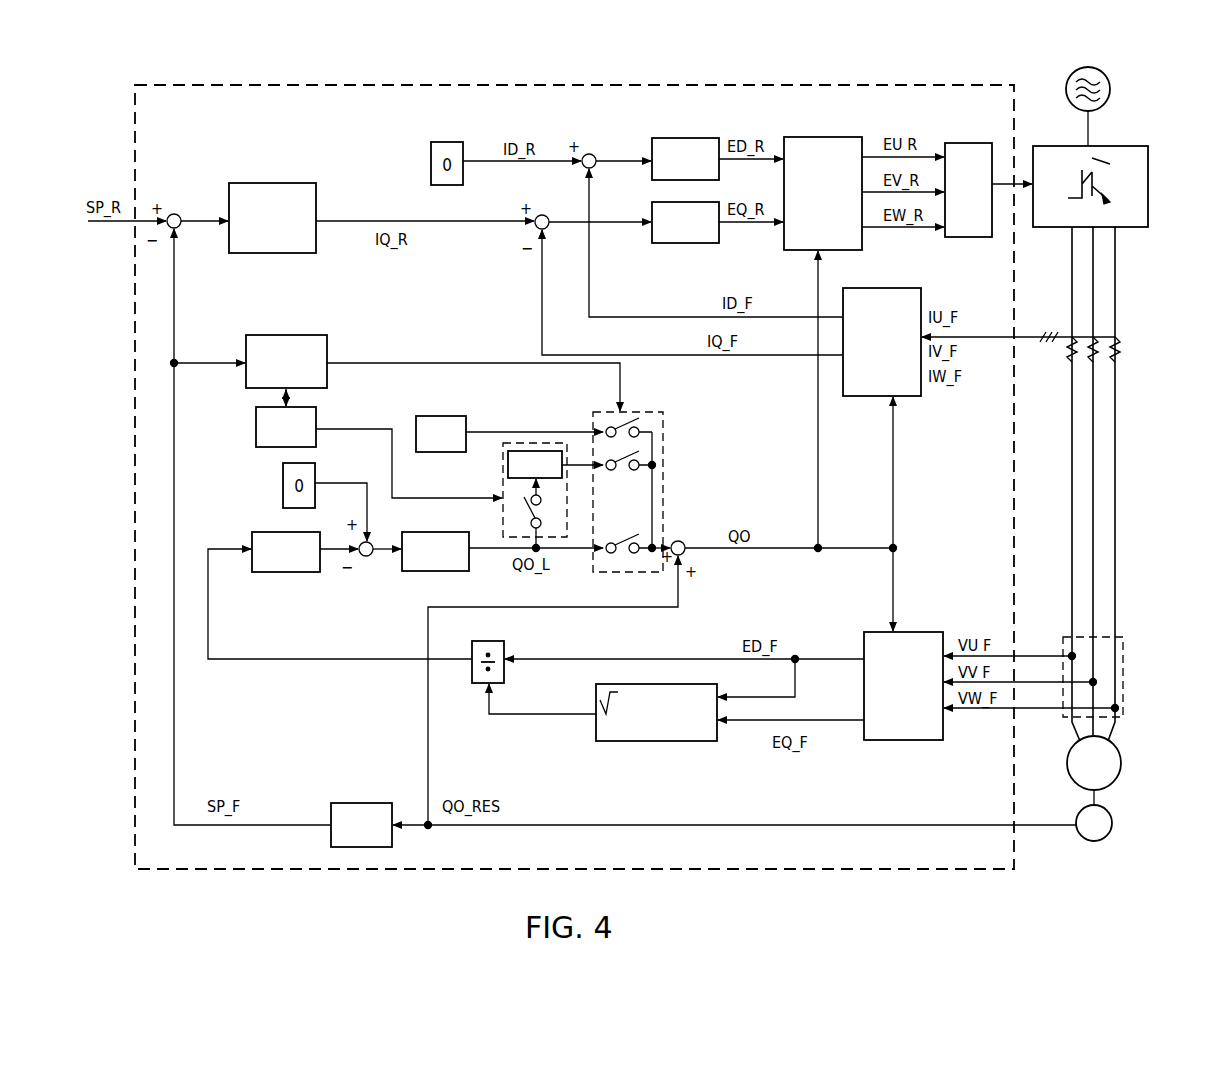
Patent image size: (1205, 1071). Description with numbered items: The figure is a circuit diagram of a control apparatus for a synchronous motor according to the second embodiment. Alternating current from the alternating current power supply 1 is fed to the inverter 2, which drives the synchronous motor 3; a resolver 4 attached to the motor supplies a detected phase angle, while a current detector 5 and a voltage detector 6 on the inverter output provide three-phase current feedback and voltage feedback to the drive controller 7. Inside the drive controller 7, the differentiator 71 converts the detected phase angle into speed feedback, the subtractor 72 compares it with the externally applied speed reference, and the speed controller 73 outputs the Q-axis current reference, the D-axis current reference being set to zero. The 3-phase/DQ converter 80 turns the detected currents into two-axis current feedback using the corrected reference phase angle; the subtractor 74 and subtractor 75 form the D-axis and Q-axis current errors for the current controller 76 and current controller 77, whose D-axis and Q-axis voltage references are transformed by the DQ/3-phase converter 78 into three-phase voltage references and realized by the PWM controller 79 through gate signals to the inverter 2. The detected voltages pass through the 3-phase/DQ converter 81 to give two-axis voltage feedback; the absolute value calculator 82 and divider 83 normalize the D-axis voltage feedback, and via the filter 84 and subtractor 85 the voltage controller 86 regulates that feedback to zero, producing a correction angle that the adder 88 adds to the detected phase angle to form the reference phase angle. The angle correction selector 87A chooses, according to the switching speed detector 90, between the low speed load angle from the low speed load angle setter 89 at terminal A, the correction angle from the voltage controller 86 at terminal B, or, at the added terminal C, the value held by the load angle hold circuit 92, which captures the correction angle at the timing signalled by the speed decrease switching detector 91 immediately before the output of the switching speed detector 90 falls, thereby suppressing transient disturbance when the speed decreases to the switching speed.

The alternating current power supply 1 is at (1094, 66).
The inverter 2 is at (1128, 146).
The synchronous motor 3 is at (1120, 748).
The resolver 4 is at (1113, 820).
The current detector 5 is at (1122, 338).
The voltage detector 6 is at (1122, 641).
The drive controller 7 is at (864, 86).
The differentiator 71 is at (358, 803).
The subtractor 72 is at (178, 215).
The speed controller 73 is at (274, 183).
The subtractor 74 is at (592, 155).
The subtractor 75 is at (546, 216).
The current controller 76 is at (684, 138).
The current controller 77 is at (692, 243).
The DQ/3-phase converter 78 is at (822, 137).
The PWM controller 79 is at (972, 143).
The 3-phase/DQ converter 80 is at (882, 288).
The 3-phase/DQ converter 81 is at (918, 632).
The absolute value calculator 82 is at (666, 741).
The divider 83 is at (478, 683).
The filter 84 is at (284, 572).
The subtractor 85 is at (364, 557).
The voltage controller 86 is at (418, 571).
The angle correction selector 87A is at (645, 412).
The adder 88 is at (684, 542).
The low speed load angle setter 89 is at (443, 416).
The switching speed detector 90 is at (316, 335).
The speed decrease switching detector 91 is at (256, 428).
The load angle hold circuit 92 is at (504, 457).